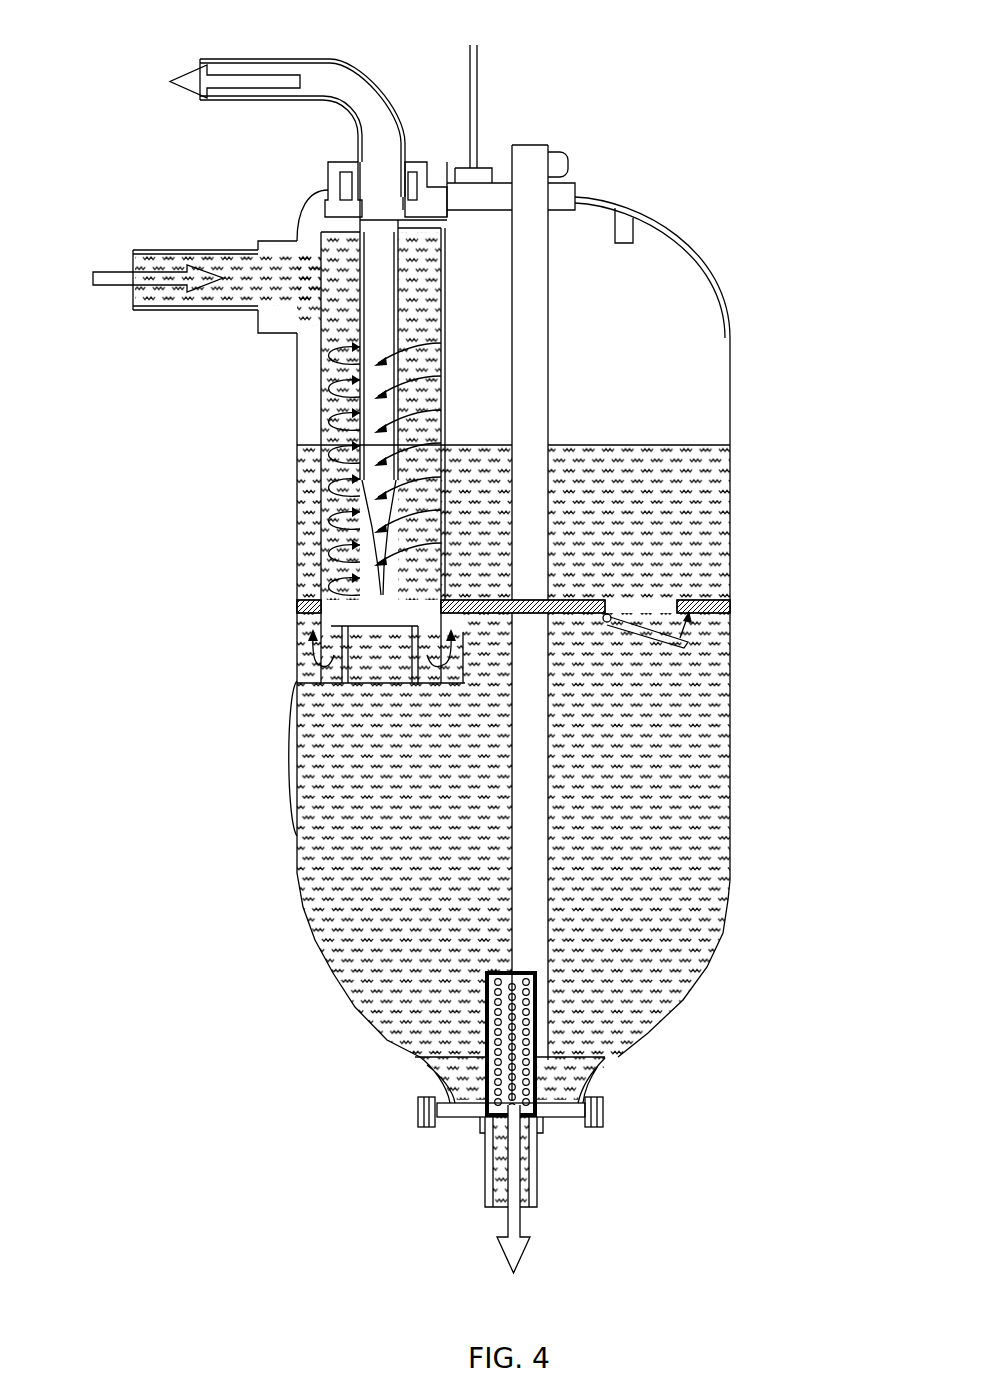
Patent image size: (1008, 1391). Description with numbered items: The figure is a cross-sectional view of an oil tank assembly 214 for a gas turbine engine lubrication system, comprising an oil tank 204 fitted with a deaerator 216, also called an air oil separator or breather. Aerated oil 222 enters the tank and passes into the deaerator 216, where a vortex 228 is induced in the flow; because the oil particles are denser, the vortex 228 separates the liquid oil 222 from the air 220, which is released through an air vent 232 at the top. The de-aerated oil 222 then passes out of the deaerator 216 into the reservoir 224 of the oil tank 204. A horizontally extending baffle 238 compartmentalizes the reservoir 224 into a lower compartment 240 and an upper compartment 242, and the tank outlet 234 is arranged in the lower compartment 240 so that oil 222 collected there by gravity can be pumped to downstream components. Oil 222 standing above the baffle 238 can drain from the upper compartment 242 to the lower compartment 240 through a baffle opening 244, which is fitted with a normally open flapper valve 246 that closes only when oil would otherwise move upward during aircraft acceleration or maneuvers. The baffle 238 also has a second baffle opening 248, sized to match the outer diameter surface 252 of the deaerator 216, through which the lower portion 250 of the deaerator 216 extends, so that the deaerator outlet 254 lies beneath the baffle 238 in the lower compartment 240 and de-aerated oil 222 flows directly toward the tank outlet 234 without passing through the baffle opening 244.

The oil tank 204 is at (731, 390).
The oil tank assembly 214 is at (730, 75).
The deaerator 216 is at (437, 362).
The air 220 is at (247, 80).
The oil 222 is at (297, 658).
The reservoir 224 is at (678, 285).
The vortex 228 is at (325, 418).
The air vent 232 is at (380, 220).
The tank outlet 234 is at (527, 1170).
The baffle 238 is at (705, 608).
The lower compartment 240 is at (668, 985).
The upper compartment 242 is at (658, 385).
The baffle opening 244 is at (675, 607).
The flapper valve 246 is at (668, 637).
The second baffle opening 248 is at (310, 607).
The lower portion 250 is at (297, 618).
The outer diameter surface 252 is at (321, 467).
The deaerator outlet 254 is at (297, 678).